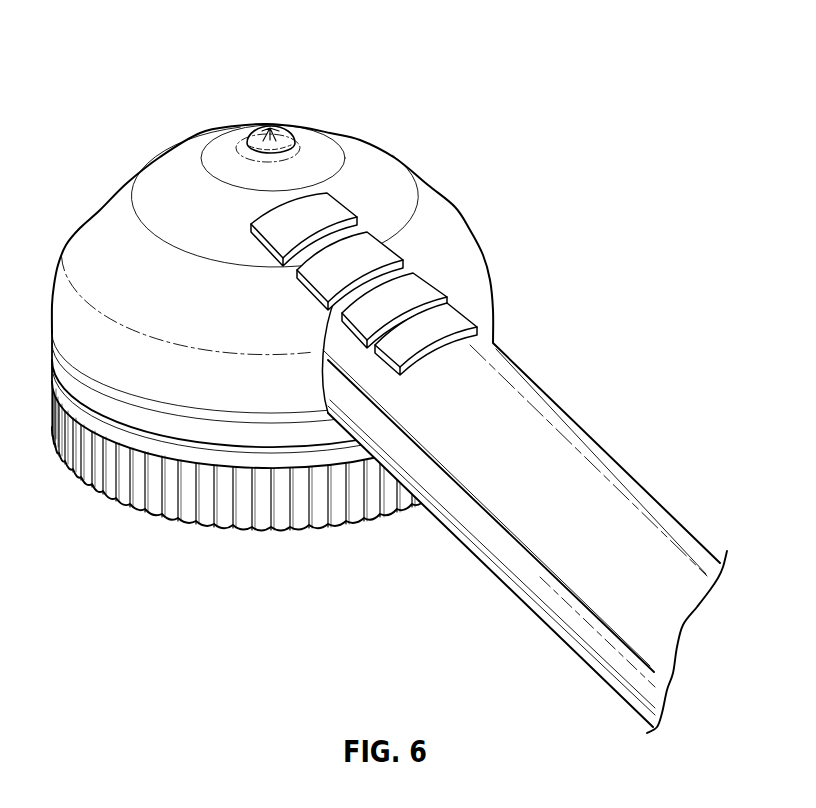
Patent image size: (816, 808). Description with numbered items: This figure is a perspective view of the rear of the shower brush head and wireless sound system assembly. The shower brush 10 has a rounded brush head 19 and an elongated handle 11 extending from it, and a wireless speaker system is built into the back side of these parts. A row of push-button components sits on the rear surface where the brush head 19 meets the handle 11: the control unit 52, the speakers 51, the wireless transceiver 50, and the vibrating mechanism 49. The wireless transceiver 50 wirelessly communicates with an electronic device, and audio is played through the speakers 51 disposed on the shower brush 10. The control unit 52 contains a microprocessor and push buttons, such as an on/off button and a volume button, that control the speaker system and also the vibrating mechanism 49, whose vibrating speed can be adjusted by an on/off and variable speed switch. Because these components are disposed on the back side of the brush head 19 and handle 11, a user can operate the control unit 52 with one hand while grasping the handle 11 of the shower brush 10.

The shower brush 10 is at (383, 372).
The brush head 19 is at (83, 237).
The control unit 52 is at (350, 211).
The speakers 51 is at (395, 248).
The wireless transceiver 50 is at (427, 278).
The vibrating mechanism 49 is at (452, 320).
The handle 11 is at (550, 450).